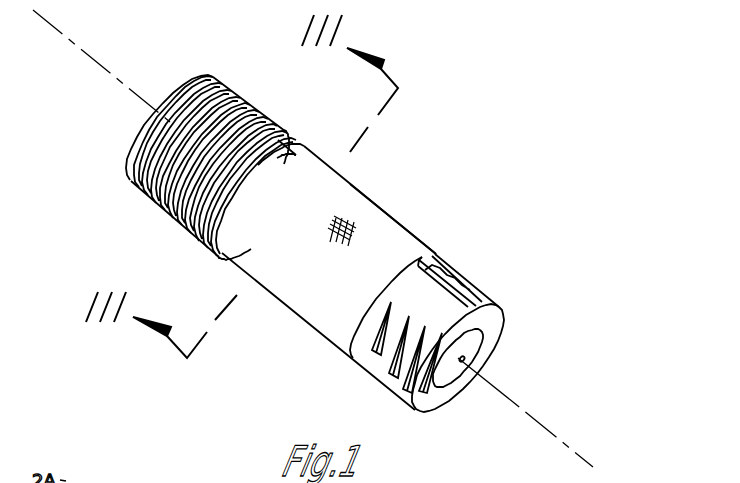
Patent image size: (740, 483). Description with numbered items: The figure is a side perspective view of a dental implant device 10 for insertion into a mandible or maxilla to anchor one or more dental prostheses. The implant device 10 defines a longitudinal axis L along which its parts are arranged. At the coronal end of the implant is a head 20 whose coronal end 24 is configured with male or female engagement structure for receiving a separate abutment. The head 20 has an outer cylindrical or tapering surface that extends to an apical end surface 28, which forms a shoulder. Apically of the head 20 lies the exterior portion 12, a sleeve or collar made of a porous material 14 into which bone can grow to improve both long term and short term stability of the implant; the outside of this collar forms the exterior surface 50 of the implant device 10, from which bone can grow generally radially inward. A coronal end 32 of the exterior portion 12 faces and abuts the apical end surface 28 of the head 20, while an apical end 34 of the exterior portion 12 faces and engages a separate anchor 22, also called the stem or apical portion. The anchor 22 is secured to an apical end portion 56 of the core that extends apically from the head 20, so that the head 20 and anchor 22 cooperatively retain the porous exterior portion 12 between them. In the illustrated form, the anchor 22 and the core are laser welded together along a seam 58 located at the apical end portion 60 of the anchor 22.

The implant device 10 is at (522, 137).
The exterior portion 12 is at (400, 222).
The porous material 14 is at (337, 237).
The head 20 is at (243, 100).
The anchor 22 is at (470, 283).
The coronal end 24 is at (197, 80).
The apical end surface 28 is at (280, 173).
The coronal end 32 is at (300, 147).
The apical end 34 is at (440, 263).
The exterior surface 50 is at (387, 202).
The apical end portion 56 is at (452, 383).
The seam 58 is at (481, 342).
The apical end portion 60 is at (427, 392).
The longitudinal axis L is at (585, 457).